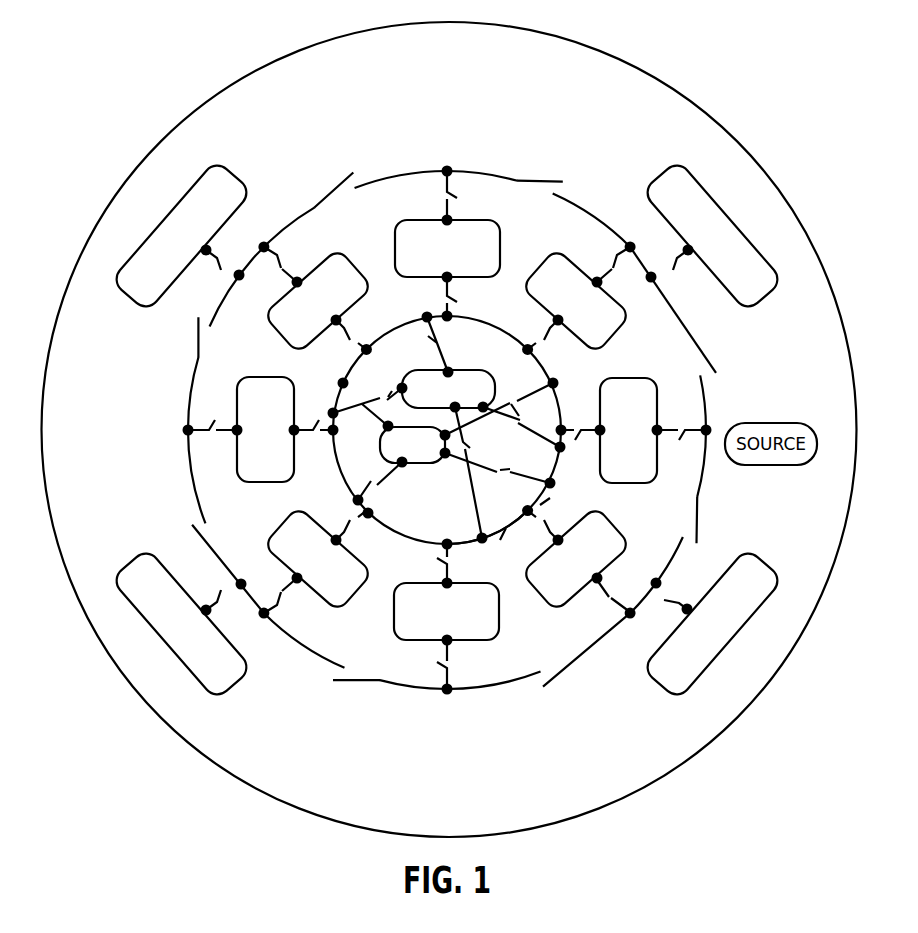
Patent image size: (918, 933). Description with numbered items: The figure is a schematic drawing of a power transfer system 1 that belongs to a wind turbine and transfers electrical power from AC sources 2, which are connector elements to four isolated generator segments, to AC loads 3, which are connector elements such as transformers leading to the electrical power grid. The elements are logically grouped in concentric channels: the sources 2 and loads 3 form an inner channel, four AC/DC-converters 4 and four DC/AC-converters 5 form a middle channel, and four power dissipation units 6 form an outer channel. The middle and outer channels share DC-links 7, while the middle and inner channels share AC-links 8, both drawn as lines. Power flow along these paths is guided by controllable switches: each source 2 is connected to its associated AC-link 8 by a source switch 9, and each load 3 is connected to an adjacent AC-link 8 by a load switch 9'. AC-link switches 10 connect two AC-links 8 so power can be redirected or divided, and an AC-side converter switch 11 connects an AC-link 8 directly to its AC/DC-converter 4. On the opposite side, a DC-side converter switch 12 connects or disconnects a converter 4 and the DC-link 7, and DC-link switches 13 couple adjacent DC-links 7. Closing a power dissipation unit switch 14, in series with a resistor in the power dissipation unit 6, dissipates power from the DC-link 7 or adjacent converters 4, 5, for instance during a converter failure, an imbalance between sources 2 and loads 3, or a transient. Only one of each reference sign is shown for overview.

The power transfer system 1 is at (754, 67).
The AC source 2 is at (471, 371).
The AC load 3 is at (420, 465).
The AC/DC-converter 4 is at (447, 430).
The DC/AC-converter 5 is at (446, 430).
The power dissipation unit 6 is at (447, 430).
The DC-link 7 is at (495, 688).
The AC-link 8 is at (484, 546).
The source switch 9 is at (429, 344).
The load switch 9' is at (367, 397).
The AC-link switch 10 is at (492, 322).
The AC-side converter switch 11 is at (548, 340).
The DC-side converter switch 12 is at (620, 268).
The DC-link switch 13 is at (708, 360).
The power dissipation unit switch 14 is at (676, 268).